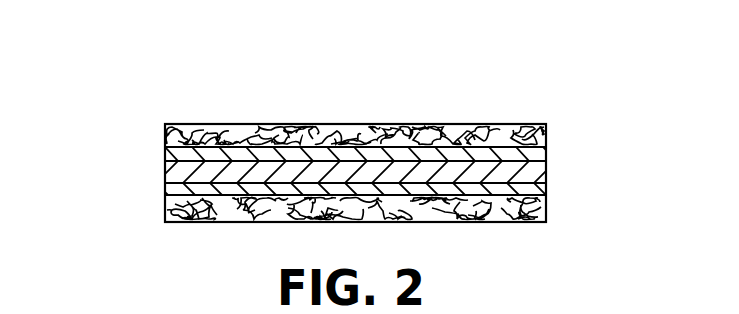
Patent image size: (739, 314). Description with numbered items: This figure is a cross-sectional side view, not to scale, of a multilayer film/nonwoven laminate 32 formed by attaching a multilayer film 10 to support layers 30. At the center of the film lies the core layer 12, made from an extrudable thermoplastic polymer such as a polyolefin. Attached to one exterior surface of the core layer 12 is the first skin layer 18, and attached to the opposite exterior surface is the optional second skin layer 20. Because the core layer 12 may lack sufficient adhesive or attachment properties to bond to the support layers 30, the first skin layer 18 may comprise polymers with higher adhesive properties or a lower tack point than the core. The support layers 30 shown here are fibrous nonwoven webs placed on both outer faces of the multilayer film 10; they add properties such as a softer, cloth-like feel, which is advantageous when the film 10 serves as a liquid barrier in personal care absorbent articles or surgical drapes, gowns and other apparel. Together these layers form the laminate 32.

The multilayer film 10 is at (134, 181).
The core layer 12 is at (547, 172).
The first skin layer 18 is at (547, 157).
The second skin layer 20 is at (547, 193).
The support layer 30 is at (523, 123).
The multilayer film/nonwoven laminate 32 is at (233, 113).